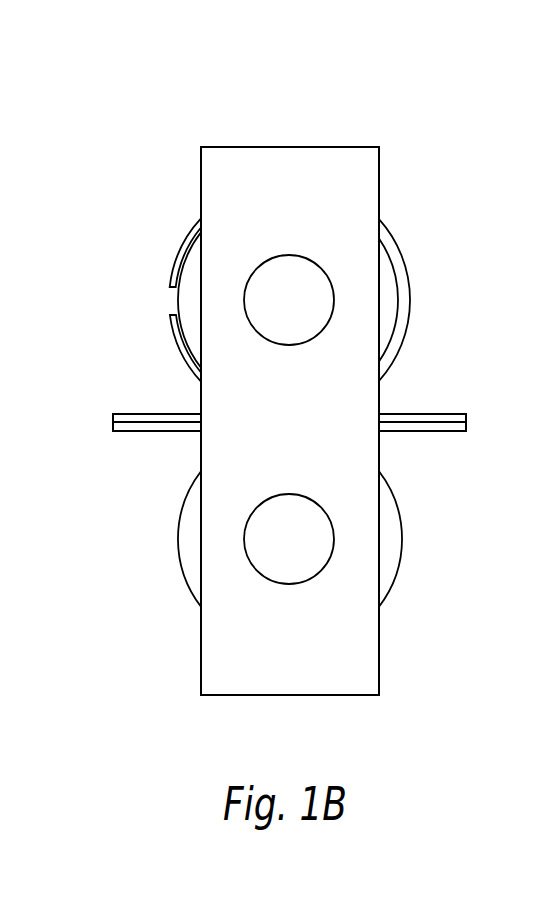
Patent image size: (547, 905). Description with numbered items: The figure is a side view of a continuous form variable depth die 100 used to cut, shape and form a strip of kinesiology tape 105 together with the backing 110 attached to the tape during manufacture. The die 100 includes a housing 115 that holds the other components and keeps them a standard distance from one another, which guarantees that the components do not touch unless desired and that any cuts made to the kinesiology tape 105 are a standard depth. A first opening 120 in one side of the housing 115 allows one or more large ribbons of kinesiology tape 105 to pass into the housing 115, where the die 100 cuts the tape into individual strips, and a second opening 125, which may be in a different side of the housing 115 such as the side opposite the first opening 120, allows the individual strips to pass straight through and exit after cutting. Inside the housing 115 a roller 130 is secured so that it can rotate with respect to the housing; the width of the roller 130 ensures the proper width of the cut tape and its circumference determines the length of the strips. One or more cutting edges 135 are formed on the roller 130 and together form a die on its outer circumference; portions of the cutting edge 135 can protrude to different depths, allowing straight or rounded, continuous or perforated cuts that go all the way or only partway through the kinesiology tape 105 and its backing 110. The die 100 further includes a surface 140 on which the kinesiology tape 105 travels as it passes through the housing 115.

The continuous form variable depth die 100 is at (170, 87).
The kinesiology tape 105 is at (168, 410).
The backing 110 is at (166, 437).
The housing 115 is at (208, 667).
The first opening 120 is at (196, 636).
The second opening 125 is at (386, 634).
The roller 130 is at (180, 298).
The cutting edge 135 is at (176, 240).
The surface 140 is at (182, 535).